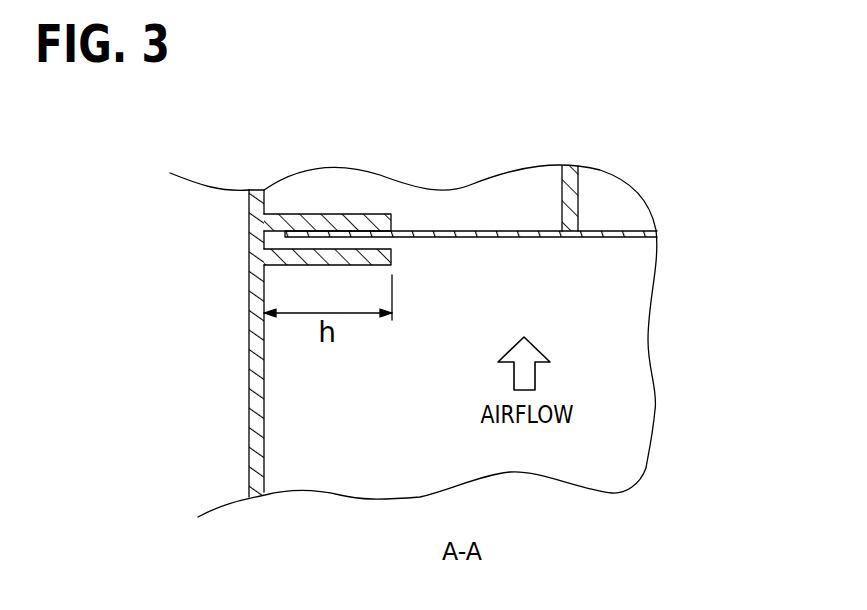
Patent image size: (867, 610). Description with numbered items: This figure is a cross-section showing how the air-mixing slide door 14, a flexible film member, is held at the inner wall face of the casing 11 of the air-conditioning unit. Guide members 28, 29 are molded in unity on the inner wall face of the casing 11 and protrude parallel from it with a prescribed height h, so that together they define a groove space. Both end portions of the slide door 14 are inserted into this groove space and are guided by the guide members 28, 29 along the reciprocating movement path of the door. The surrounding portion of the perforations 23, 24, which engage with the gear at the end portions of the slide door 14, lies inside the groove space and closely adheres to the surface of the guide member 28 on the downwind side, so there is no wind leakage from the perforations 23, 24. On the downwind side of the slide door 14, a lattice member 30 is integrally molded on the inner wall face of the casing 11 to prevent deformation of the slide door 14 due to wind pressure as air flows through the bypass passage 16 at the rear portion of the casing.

The casing 11 is at (255, 418).
The air-mixing slide door 14 is at (623, 230).
The bypass passage 16 is at (508, 205).
The perforation 23 is at (340, 242).
The perforation 24 is at (375, 234).
The guide member 28 is at (318, 221).
The guide member 29 is at (310, 258).
The lattice member 30 is at (574, 193).